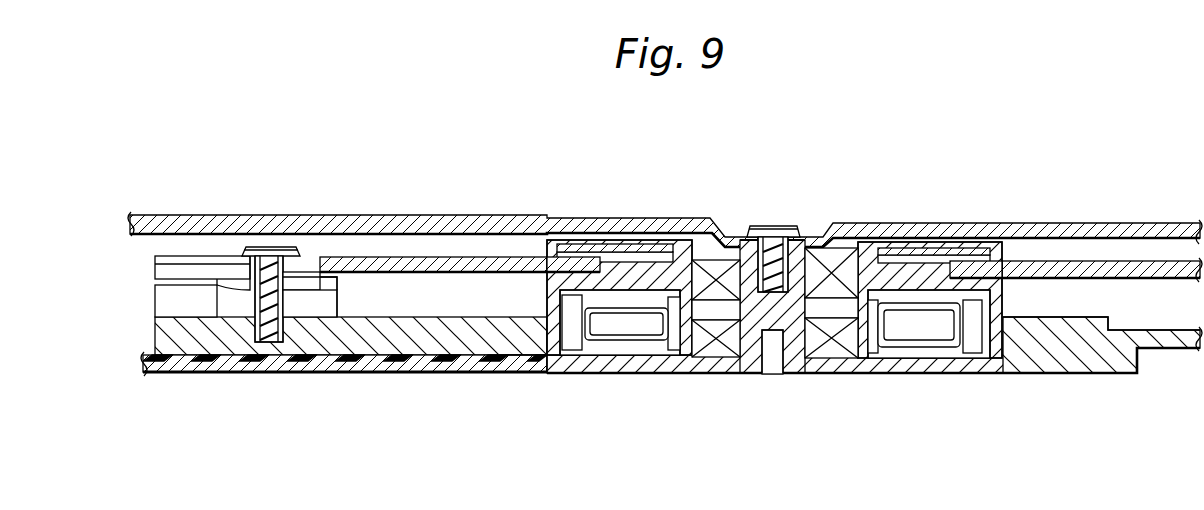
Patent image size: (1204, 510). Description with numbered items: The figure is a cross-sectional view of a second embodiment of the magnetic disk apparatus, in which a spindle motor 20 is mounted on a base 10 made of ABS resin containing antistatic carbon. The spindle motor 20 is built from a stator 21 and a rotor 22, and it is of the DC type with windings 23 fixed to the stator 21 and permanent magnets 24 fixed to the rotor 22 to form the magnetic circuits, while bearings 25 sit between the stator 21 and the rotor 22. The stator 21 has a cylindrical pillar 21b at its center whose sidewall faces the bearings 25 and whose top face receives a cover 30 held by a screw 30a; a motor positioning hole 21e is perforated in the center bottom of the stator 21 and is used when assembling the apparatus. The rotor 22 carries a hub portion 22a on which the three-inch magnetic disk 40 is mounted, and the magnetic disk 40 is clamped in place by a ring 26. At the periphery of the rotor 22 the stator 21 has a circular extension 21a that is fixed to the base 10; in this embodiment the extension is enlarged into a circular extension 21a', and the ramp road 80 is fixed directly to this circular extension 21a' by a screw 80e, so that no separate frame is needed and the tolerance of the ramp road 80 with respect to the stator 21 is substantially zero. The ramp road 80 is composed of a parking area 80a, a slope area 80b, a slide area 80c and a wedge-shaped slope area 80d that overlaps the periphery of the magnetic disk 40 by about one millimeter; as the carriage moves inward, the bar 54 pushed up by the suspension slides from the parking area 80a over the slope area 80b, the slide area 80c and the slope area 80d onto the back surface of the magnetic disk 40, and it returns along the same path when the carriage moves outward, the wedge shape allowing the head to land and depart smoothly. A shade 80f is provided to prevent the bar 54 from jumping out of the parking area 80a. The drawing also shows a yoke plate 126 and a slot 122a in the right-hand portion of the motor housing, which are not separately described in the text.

The base 10 is at (648, 290).
The spindle motor 20 is at (853, 311).
The stator 21 is at (853, 305).
The circular extension 21a is at (1078, 374).
The circular extension 21a' is at (527, 391).
The cylindrical pillar 21b is at (803, 262).
The motor positioning hole 21e is at (772, 362).
The rotor 22 is at (780, 295).
The hub portion 22a is at (567, 265).
The windings 23 is at (628, 328).
The permanent magnets 24 is at (572, 328).
The bearings 25 is at (715, 342).
The ring 26 is at (975, 258).
The cover 30 is at (677, 222).
The screw 30a is at (770, 240).
The magnetic disk 40 is at (425, 262).
The bar 54 is at (342, 297).
The ramp road 80 is at (275, 261).
The parking area 80a is at (192, 272).
The slope area 80b is at (237, 270).
The slide area 80c is at (300, 288).
The slope area 80d is at (353, 217).
The screw 80e is at (264, 345).
The shade 80f is at (168, 300).
The yoke slot 122a is at (992, 262).
The yoke plate 126 is at (593, 247).